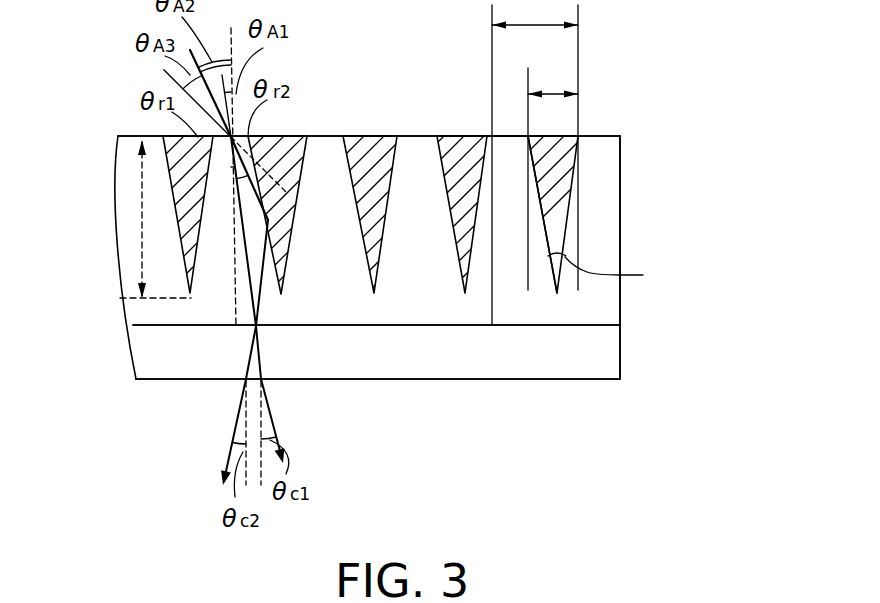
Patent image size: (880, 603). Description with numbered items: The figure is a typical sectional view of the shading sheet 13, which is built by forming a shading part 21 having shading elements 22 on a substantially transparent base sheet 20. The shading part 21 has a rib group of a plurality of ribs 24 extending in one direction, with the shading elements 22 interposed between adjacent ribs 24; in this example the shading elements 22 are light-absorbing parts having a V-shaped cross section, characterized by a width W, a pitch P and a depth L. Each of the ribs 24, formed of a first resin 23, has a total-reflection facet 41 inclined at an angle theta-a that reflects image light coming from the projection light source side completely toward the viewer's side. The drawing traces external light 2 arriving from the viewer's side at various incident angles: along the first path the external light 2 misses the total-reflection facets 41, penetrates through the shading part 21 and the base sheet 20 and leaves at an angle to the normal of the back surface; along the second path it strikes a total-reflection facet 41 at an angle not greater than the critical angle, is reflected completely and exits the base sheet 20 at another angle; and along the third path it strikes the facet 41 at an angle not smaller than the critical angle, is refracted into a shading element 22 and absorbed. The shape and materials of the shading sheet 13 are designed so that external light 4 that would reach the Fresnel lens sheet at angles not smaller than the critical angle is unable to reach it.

The external light 2 is at (176, 82).
The external light 4 is at (235, 432).
The shading sheet 13 is at (625, 388).
The base sheet 20 is at (735, 327).
The shading part 21 is at (735, 134).
The shading elements 22 is at (552, 143).
The first resin 23 is at (605, 306).
The ribs 24 is at (503, 202).
The total-reflection facet 41 is at (542, 233).